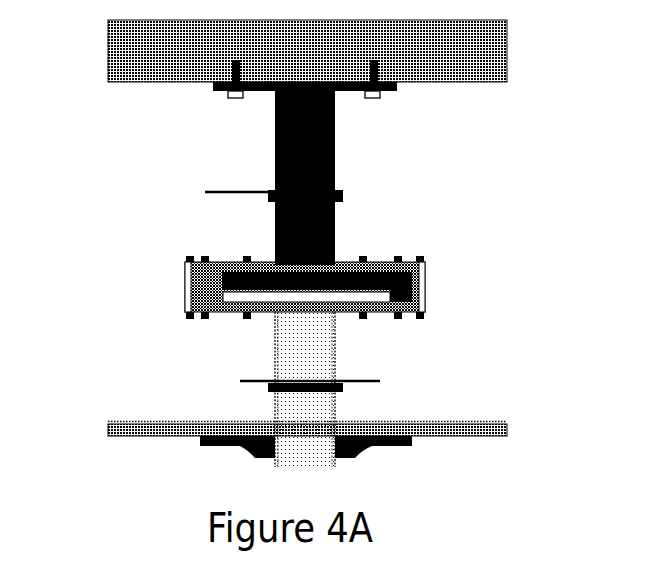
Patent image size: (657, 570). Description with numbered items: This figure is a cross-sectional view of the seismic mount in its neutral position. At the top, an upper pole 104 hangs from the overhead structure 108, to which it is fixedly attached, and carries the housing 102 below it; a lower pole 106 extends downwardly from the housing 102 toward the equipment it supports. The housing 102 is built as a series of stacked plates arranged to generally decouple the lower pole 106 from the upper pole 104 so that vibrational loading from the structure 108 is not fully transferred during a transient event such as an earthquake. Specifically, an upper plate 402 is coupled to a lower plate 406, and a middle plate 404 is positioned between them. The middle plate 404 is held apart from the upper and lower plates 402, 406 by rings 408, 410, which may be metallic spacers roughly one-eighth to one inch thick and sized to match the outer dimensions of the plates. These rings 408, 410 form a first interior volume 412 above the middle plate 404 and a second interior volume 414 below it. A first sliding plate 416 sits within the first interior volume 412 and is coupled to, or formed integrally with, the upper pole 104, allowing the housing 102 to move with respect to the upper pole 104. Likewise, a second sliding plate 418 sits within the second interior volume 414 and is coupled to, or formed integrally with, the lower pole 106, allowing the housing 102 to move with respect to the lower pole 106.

The housing 102 is at (305, 276).
The upper pole 104 is at (273, 148).
The lower pole 106 is at (327, 448).
The overhead structure 108 is at (120, 48).
The upper plate 402 is at (187, 265).
The middle plate 404 is at (185, 290).
The lower plate 406 is at (207, 318).
The ring 408 is at (426, 273).
The ring 410 is at (428, 297).
The first interior volume 412 is at (398, 262).
The second interior volume 414 is at (407, 300).
The first sliding plate 416 is at (247, 263).
The second sliding plate 418 is at (262, 296).